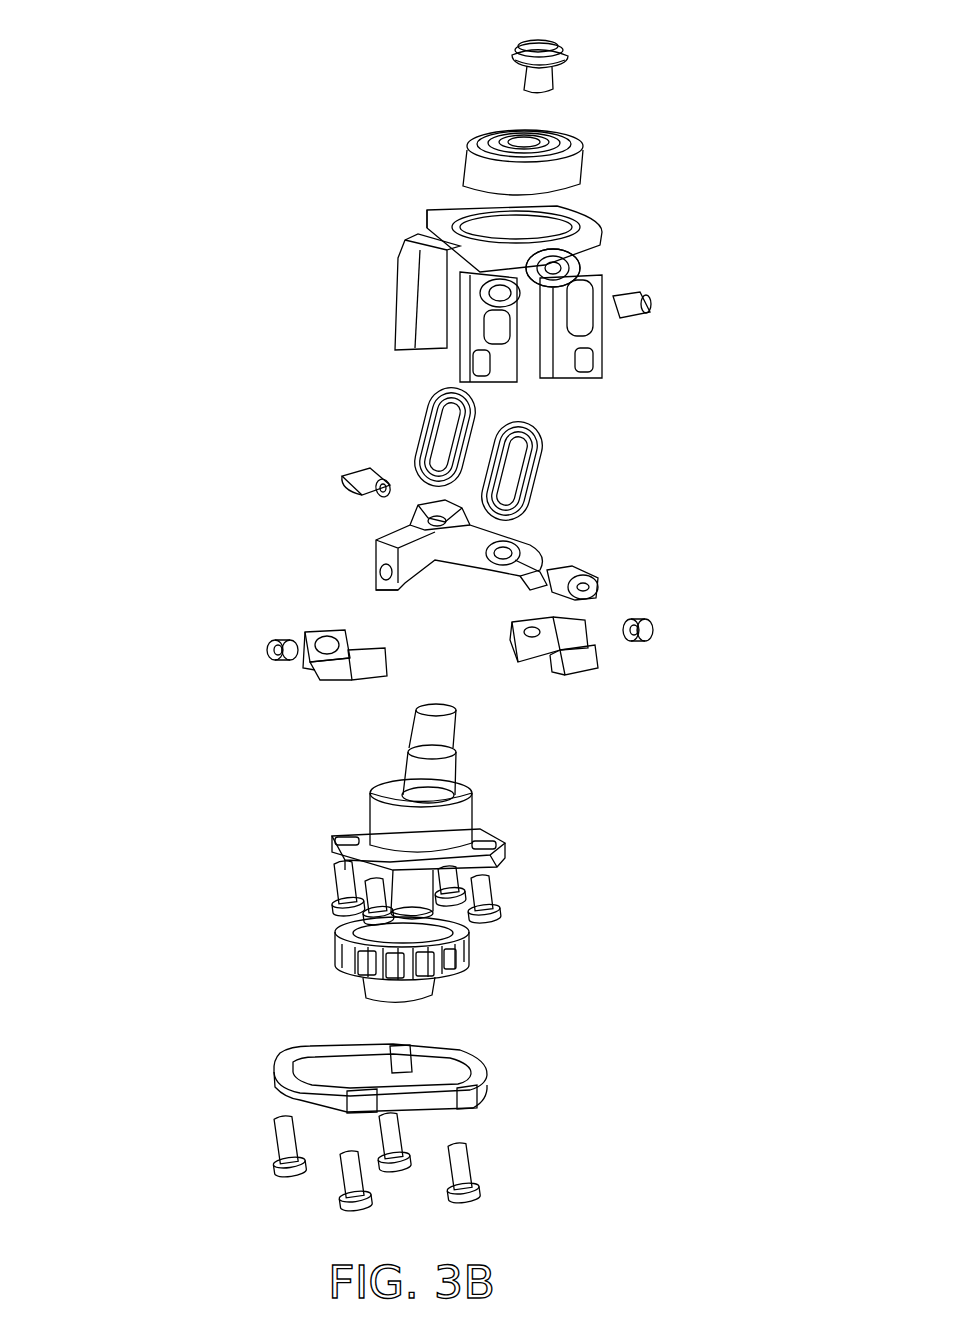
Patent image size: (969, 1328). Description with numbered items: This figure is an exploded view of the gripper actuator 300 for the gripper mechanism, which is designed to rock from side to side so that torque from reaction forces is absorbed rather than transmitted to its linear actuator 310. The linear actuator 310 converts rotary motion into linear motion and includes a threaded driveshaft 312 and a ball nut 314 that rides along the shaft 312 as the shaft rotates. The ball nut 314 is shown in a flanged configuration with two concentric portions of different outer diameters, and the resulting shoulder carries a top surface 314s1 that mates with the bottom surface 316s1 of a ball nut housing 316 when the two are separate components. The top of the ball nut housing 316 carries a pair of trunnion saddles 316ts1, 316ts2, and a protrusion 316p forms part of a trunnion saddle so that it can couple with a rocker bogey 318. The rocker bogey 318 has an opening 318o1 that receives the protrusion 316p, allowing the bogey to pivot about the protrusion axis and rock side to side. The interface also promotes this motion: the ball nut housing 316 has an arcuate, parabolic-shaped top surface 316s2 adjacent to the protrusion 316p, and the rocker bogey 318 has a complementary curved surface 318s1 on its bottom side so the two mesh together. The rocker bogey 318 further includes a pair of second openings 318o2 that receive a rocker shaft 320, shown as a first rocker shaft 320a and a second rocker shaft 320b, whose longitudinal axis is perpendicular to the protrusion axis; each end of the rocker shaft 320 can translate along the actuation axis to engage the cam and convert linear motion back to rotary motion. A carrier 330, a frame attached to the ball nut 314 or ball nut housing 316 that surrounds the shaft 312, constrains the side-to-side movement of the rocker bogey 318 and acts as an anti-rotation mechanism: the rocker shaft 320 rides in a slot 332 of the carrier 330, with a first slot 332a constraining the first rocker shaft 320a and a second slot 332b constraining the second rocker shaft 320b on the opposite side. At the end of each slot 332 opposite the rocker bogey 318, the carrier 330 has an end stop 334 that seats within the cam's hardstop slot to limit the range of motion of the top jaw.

The gripper actuator 300 is at (750, 68).
The linear actuator 310 is at (152, 497).
The driveshaft 312 is at (415, 733).
The ball nut 314 is at (513, 750).
The top surface of the ball nut 314s1 is at (388, 786).
The ball nut housing 316 is at (240, 600).
The protrusion 316p is at (312, 667).
The bottom surface of the ball nut housing 316s1 is at (580, 676).
The arcuate top surface of the ball nut housing 316s2 is at (360, 640).
The first trunnion saddle 316ts1 is at (325, 621).
The second trunnion saddle 316ts2 is at (565, 621).
The rocker bogey 318 is at (375, 541).
The opening 318o1 is at (381, 576).
The second openings 318o2 is at (522, 548).
The curved surface 318s1 is at (402, 596).
The rocker shaft 320 is at (470, 515).
The first rocker shaft 320a is at (340, 477).
The second rocker shaft 320b is at (600, 588).
The carrier 330 is at (428, 272).
The slot 332 is at (478, 454).
The first slot 332a is at (415, 430).
The second slot 332b is at (543, 472).
The end stop 334 is at (572, 268).